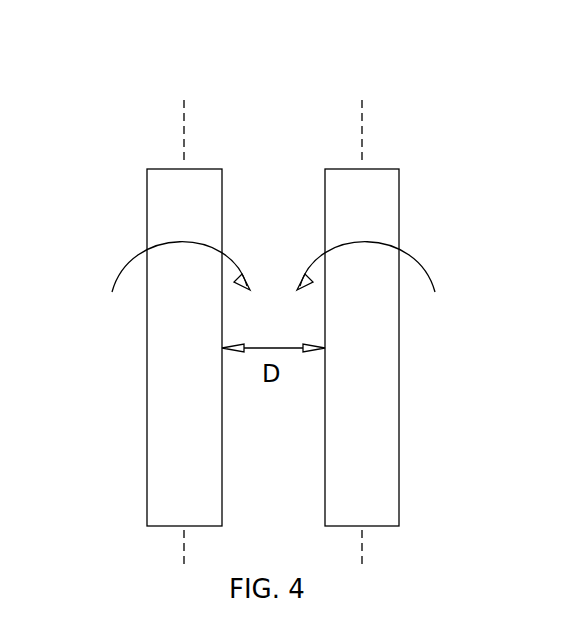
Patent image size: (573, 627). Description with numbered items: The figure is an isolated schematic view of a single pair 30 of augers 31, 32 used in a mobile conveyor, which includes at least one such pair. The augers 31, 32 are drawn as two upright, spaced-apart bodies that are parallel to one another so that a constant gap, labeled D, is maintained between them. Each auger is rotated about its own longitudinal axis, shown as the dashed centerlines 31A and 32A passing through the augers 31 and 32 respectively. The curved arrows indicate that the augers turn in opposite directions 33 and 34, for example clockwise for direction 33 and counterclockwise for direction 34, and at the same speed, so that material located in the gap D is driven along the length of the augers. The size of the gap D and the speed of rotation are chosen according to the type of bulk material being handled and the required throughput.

The pair of augers 30 is at (138, 93).
The auger 31 is at (147, 414).
The auger 32 is at (399, 414).
The longitudinal axis 31A is at (184, 127).
The longitudinal axis 32A is at (362, 127).
The direction of rotation 33 is at (135, 262).
The direction of rotation 34 is at (413, 258).